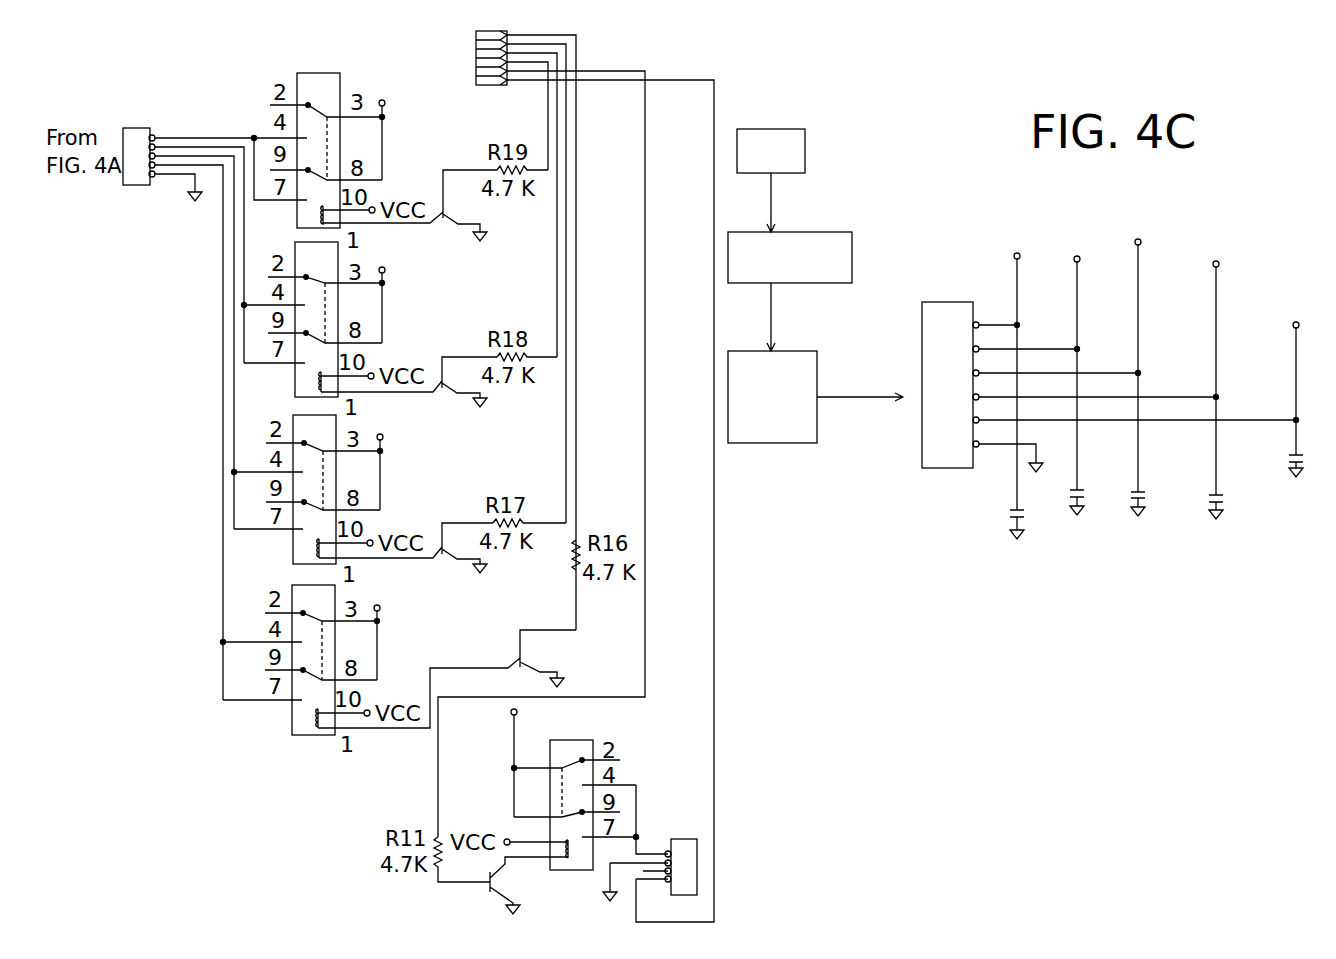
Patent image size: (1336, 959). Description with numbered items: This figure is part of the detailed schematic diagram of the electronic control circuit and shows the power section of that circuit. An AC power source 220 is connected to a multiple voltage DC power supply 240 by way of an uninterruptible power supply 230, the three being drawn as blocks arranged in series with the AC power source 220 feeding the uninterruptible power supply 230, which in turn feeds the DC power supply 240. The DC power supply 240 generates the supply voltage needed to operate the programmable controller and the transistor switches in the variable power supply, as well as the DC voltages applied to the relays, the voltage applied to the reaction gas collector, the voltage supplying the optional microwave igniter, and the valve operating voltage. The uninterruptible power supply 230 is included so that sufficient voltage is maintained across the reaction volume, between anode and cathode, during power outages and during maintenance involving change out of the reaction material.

The AC power source 220 is at (768, 145).
The uninterruptible power supply 230 is at (805, 245).
The multiple voltage DC power supply 240 is at (792, 368).